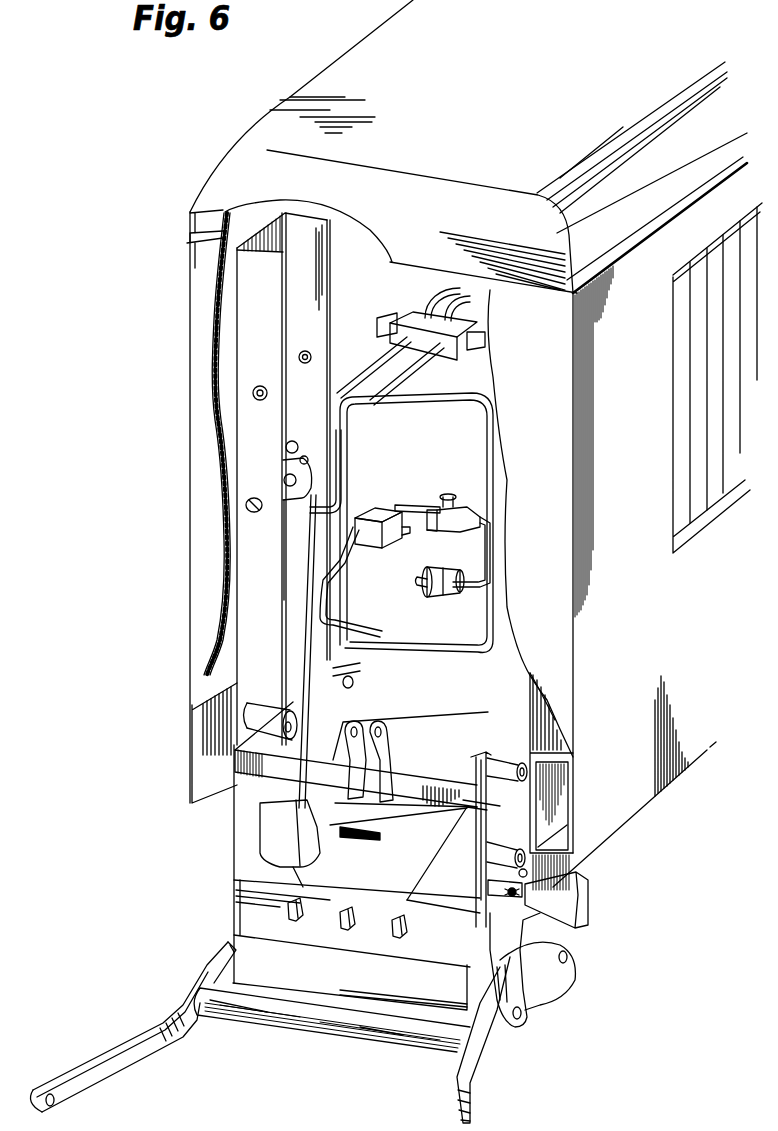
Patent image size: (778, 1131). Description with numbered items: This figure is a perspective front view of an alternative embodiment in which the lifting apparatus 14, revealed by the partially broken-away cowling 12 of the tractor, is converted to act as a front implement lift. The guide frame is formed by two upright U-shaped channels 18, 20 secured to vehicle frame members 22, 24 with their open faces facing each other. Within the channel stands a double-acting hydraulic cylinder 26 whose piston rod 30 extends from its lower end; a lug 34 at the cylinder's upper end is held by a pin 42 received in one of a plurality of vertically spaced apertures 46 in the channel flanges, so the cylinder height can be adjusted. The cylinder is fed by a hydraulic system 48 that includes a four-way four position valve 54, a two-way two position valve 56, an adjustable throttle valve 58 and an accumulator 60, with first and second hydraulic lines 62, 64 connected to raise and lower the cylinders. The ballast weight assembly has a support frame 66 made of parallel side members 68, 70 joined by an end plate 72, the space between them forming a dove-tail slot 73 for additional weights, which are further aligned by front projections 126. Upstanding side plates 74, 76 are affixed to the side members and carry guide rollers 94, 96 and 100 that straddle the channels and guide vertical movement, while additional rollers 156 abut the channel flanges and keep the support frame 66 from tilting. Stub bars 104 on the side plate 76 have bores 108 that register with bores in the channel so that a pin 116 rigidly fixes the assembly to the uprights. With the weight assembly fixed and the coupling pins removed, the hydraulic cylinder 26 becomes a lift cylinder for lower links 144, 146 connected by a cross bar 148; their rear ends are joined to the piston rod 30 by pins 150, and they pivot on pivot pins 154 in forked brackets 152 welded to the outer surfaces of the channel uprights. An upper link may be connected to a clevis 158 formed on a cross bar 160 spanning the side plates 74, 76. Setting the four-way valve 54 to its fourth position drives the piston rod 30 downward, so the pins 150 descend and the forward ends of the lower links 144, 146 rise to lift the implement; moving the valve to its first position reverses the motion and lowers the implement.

The cowling 12 is at (472, 115).
The lifting apparatus 14 is at (262, 588).
The upright channel 18 is at (270, 296).
The upright channel 20 is at (543, 723).
The frame member 22 is at (192, 775).
The frame member 24 is at (577, 767).
The double-acting hydraulic cylinder 26 is at (296, 542).
The piston rod 30 is at (297, 782).
The lug 34 is at (286, 444).
The pin 42 is at (258, 499).
The apertures 46 is at (300, 365).
The hydraulic system 48 is at (399, 558).
The four-way four position valve 54 is at (413, 310).
The two-way two position valve 56 is at (393, 510).
The adjustable throttle valve 58 is at (458, 503).
The accumulator 60 is at (430, 598).
The first hydraulic line 62 is at (418, 367).
The second hydraulic line 64 is at (353, 397).
The support frame 66 is at (253, 861).
The side member 68 is at (387, 713).
The side member 70 is at (463, 897).
The end plate 72 is at (433, 713).
The dove-tail slot 73 is at (418, 873).
The side plate 74 is at (270, 737).
The side plate 76 is at (487, 790).
The guide roller 94 is at (333, 670).
The guide roller 96 is at (262, 705).
The guide roller 100 is at (507, 757).
The stub bar 104 is at (527, 890).
The bore 108 is at (562, 905).
The pin 116 is at (514, 896).
The front projections 126 is at (304, 922).
The lower link 144 is at (130, 1057).
The lower link 146 is at (462, 1078).
The cross bar 148 is at (330, 1030).
The pin 150 is at (320, 850).
The forked bracket 152 is at (520, 1023).
The pivot pin 154 is at (521, 1013).
The additional roller 156 is at (525, 854).
The clevis 158 is at (383, 747).
The cross bar 160 is at (463, 800).